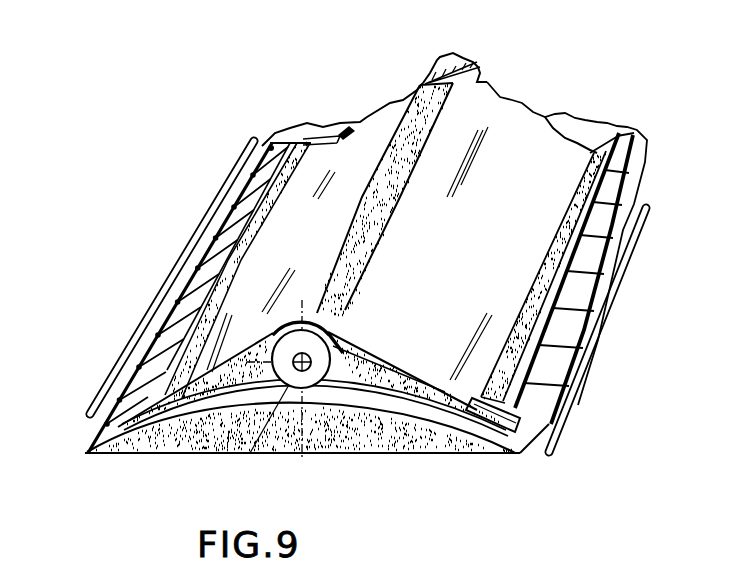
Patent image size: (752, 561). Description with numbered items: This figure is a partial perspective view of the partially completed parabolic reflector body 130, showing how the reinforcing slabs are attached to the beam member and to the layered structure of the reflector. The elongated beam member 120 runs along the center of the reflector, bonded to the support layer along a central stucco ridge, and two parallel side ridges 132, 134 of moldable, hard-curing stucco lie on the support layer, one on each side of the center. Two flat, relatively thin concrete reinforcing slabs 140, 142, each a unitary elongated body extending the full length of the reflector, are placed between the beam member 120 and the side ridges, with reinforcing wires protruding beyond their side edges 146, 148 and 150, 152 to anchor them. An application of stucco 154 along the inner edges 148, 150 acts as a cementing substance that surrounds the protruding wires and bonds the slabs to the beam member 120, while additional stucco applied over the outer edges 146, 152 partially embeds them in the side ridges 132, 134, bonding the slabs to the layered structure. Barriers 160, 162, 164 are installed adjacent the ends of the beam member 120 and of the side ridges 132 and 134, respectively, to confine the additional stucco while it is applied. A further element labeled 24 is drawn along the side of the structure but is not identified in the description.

The side rail 24 is at (112, 373).
The beam member 120 is at (363, 457).
The parabolic reflector body 130 is at (584, 107).
The side ridge 132 is at (628, 234).
The side ridge 134 is at (283, 151).
The reinforcing slab 140 is at (503, 117).
The reinforcing slab 142 is at (342, 134).
The side edge 146 is at (628, 178).
The side edge 148 is at (480, 93).
The side edge 150 is at (407, 127).
The side edge 152 is at (262, 180).
The stucco 154 is at (358, 214).
The barrier 160 is at (317, 310).
The barrier 162 is at (482, 416).
The barrier 164 is at (167, 403).